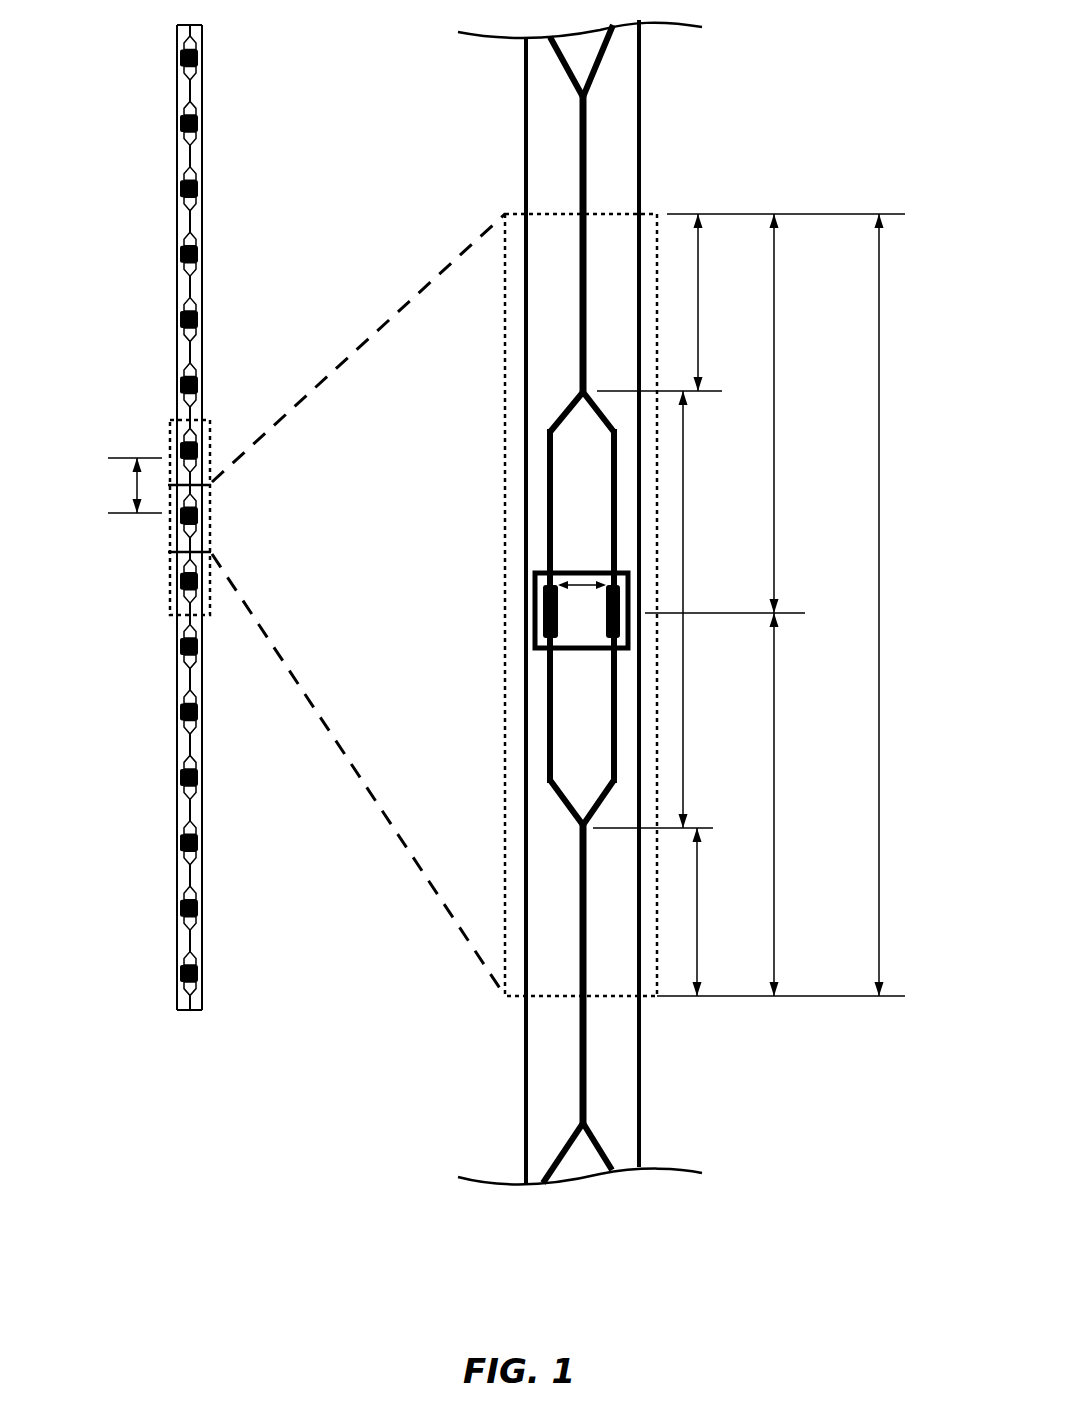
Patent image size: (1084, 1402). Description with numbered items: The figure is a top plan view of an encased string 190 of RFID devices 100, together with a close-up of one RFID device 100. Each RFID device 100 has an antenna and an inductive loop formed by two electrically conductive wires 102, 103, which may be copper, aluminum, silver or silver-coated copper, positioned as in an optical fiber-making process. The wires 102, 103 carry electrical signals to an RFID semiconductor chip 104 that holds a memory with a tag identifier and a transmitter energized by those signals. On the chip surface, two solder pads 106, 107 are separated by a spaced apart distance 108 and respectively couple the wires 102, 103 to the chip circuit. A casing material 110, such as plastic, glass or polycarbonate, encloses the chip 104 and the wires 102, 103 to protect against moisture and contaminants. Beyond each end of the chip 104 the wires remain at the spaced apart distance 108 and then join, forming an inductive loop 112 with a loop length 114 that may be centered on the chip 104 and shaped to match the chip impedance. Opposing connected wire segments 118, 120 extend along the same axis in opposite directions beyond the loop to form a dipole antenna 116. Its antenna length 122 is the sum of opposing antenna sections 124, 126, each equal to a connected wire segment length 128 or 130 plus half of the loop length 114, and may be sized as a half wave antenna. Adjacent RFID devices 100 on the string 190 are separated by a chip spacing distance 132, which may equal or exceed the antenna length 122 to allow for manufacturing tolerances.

The RFID device 100 is at (433, 220).
The wire 102 is at (548, 718).
The wire 103 is at (610, 718).
The RFID semiconductor chip 104 is at (582, 575).
The solder pad 106 is at (545, 606).
The solder pad 107 is at (606, 636).
The spaced apart distance 108 is at (545, 587).
The casing material 110 is at (548, 920).
The inductive loop 112 is at (541, 410).
The loop length 114 is at (683, 500).
The dipole antenna 116 is at (609, 256).
The connected wire segment 118 is at (587, 332).
The connected wire segment 120 is at (585, 940).
The antenna length 122 is at (879, 512).
The antenna section 124 is at (774, 367).
The antenna section 126 is at (774, 730).
The connected wire segment length 128 is at (698, 280).
The connected wire segment length 130 is at (697, 892).
The chip spacing distance 132 is at (134, 490).
The string 190 is at (154, 86).